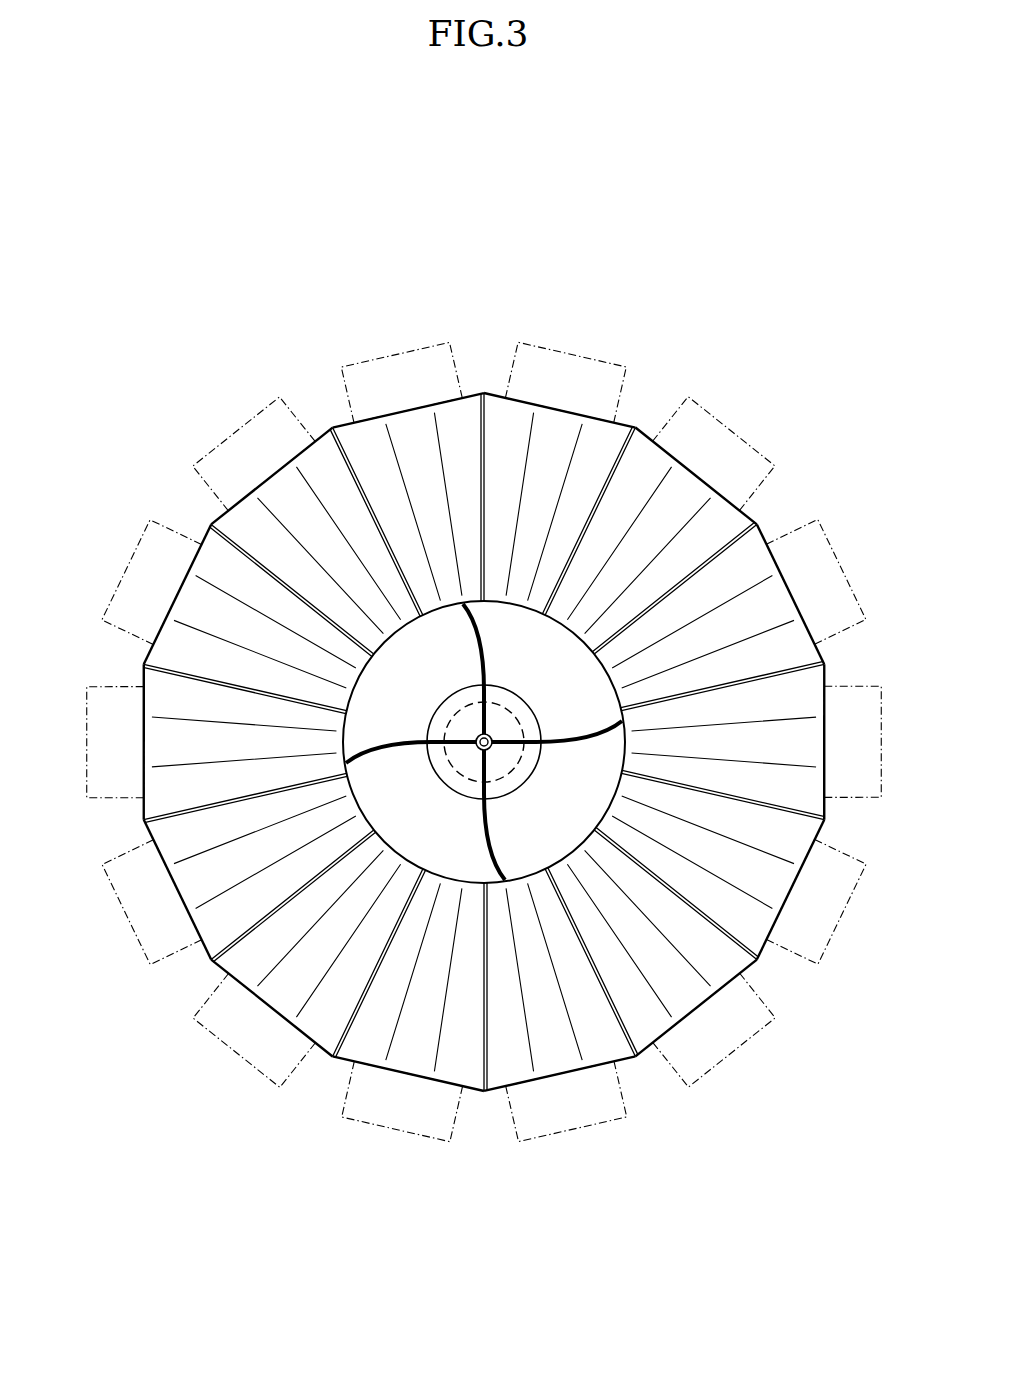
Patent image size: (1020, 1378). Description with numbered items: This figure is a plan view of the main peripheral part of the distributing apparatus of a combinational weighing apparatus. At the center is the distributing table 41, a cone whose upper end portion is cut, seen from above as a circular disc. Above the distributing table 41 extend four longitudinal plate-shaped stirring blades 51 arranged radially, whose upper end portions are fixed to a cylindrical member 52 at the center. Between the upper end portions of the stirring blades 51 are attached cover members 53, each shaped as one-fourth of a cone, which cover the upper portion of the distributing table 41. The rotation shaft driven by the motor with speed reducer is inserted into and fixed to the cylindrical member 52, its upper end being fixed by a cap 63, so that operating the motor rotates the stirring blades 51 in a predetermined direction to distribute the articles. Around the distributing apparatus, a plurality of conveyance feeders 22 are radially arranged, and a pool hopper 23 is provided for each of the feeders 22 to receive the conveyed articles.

The conveyance feeder 22 is at (552, 422).
The pool hopper 23 is at (560, 341).
The distributing table 41 is at (560, 622).
The stirring blade 51 is at (478, 637).
The cylindrical member 52 is at (490, 748).
The cover member 53 is at (452, 692).
The cap 63 is at (492, 738).